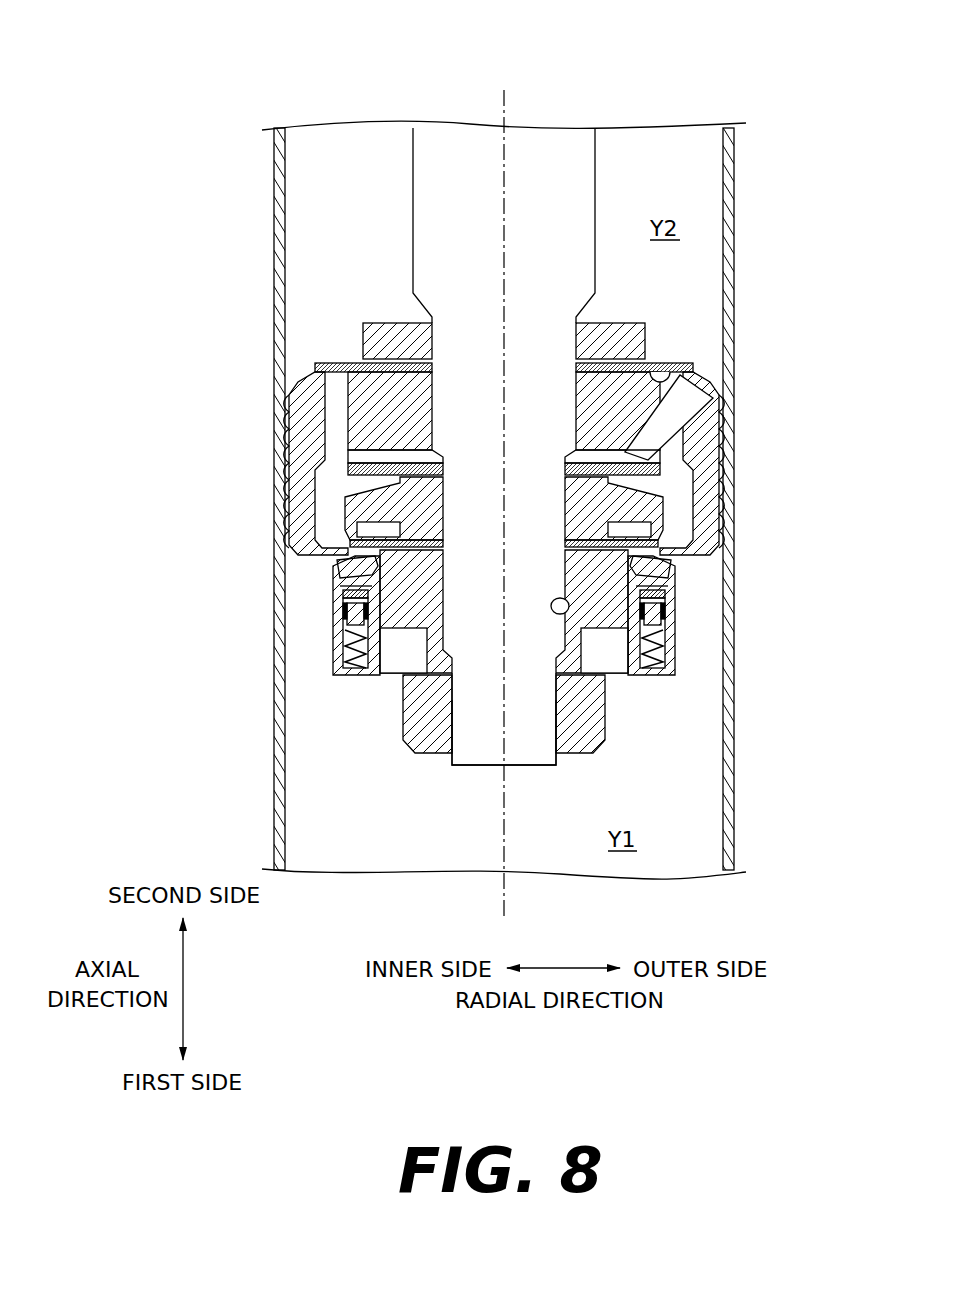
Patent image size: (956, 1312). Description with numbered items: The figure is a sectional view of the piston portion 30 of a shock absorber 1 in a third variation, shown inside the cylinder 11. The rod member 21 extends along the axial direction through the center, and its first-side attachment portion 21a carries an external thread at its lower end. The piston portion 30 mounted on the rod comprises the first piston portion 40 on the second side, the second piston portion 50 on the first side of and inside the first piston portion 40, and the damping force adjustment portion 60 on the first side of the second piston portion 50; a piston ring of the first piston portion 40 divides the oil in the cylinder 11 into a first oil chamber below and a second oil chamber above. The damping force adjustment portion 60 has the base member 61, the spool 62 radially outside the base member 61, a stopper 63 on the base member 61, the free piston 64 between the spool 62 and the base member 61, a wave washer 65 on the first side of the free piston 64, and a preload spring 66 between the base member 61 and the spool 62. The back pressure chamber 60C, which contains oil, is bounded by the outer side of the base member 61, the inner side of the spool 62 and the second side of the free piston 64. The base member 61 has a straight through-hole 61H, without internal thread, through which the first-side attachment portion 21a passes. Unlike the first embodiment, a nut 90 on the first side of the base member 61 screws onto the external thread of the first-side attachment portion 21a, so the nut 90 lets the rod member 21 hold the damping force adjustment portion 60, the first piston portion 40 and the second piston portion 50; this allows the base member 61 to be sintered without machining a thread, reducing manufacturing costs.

The shock absorber 1 is at (240, 58).
The cylinder 11 is at (735, 188).
The rod member 21 is at (405, 238).
The first-side attachment portion 21a is at (556, 760).
The piston portion 30 is at (296, 300).
The first piston portion 40 is at (288, 374).
The second piston portion 50 is at (330, 503).
The damping force adjustment portion 60 is at (454, 651).
The back pressure chamber 60C is at (345, 592).
The base member 61 is at (353, 665).
The through-hole 61H is at (568, 614).
The spool 62 is at (345, 636).
The stopper 63 is at (335, 598).
The free piston 64 is at (335, 617).
The wave washer 65 is at (360, 648).
The preload spring 66 is at (335, 578).
The nut 90 is at (606, 722).